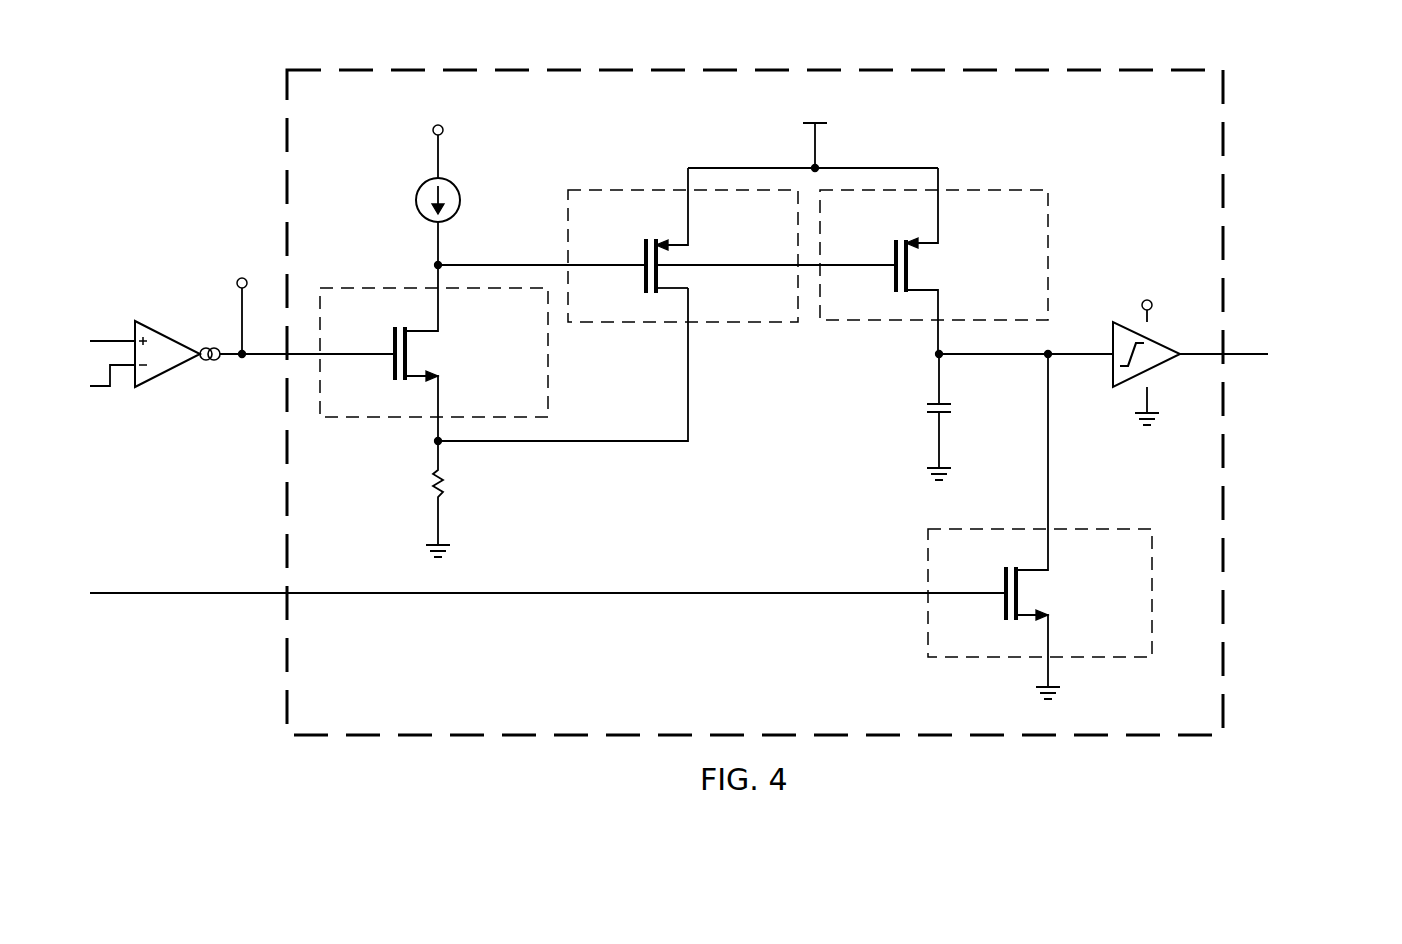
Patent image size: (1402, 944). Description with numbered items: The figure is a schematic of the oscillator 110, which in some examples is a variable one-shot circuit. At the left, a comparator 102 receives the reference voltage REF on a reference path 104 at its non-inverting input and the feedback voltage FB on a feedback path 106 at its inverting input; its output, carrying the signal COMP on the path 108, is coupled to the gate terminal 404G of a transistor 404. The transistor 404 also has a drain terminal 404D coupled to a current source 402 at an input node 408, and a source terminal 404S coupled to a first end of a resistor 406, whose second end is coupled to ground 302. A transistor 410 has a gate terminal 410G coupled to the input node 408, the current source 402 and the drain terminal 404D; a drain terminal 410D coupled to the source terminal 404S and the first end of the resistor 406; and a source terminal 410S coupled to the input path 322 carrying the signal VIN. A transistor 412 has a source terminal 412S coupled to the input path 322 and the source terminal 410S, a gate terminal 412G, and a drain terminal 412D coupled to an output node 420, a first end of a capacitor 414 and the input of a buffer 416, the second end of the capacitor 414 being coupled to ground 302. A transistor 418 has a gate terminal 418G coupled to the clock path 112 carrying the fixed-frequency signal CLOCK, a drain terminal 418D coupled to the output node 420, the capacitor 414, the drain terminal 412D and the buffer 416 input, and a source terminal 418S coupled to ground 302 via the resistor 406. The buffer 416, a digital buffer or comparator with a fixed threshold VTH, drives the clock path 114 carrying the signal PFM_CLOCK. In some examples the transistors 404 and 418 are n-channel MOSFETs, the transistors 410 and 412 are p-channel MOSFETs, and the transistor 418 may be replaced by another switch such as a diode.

The comparator 102 is at (167, 373).
The reference path 104 is at (110, 341).
The feedback path 106 is at (100, 388).
The path 108 is at (242, 320).
The oscillator 110 is at (860, 66).
The clock path 112 is at (190, 594).
The clock path 114 is at (1243, 352).
The ground 302 is at (428, 552).
The input path 322 is at (818, 148).
The current source 402 is at (417, 198).
The transistor 404 is at (477, 353).
The gate terminal 404G is at (378, 352).
The drain terminal 404D is at (440, 322).
The source terminal 404S is at (440, 385).
The resistor 406 is at (430, 488).
The input node 408 is at (430, 263).
The transistor 410 is at (683, 229).
The gate terminal 410G is at (630, 265).
The source terminal 410S is at (690, 240).
The drain terminal 410D is at (690, 302).
The transistor 412 is at (974, 261).
The gate terminal 412G is at (880, 267).
The source terminal 412S is at (940, 242).
The drain terminal 412D is at (940, 300).
The capacitor 414 is at (955, 408).
The buffer 416 is at (1163, 340).
The transistor 418 is at (1040, 520).
The gate terminal 418G is at (990, 598).
The drain terminal 418D is at (1050, 560).
The source terminal 418S is at (1050, 627).
The output node 420 is at (934, 357).